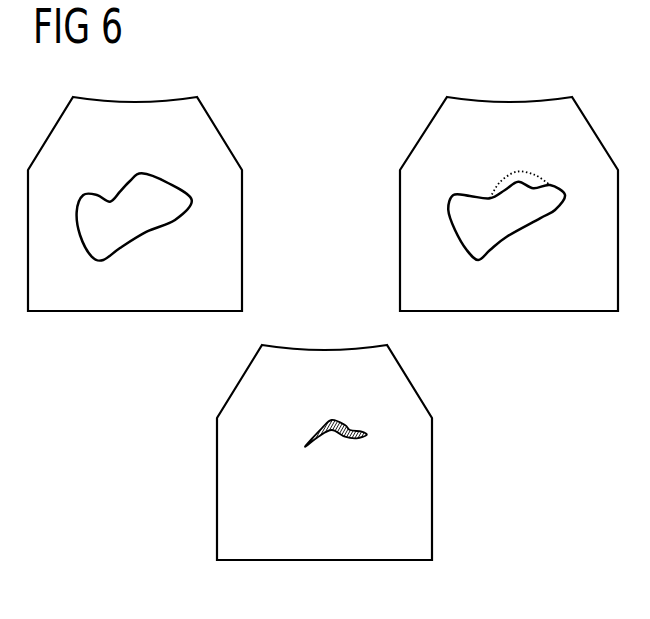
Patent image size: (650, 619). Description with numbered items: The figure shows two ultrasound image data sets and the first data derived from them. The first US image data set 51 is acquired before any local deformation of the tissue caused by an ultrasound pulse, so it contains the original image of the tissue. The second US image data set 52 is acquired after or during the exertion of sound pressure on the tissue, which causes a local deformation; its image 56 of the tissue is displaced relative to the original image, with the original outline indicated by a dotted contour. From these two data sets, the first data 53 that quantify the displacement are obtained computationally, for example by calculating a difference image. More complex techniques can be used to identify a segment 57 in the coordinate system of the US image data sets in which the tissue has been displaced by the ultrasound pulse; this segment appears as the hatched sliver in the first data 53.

The first US image data set 51 is at (165, 100).
The second US image data set 52 is at (508, 102).
The first data 53 is at (323, 350).
The image of the tissue 56 is at (513, 225).
The segment 57 is at (350, 420).